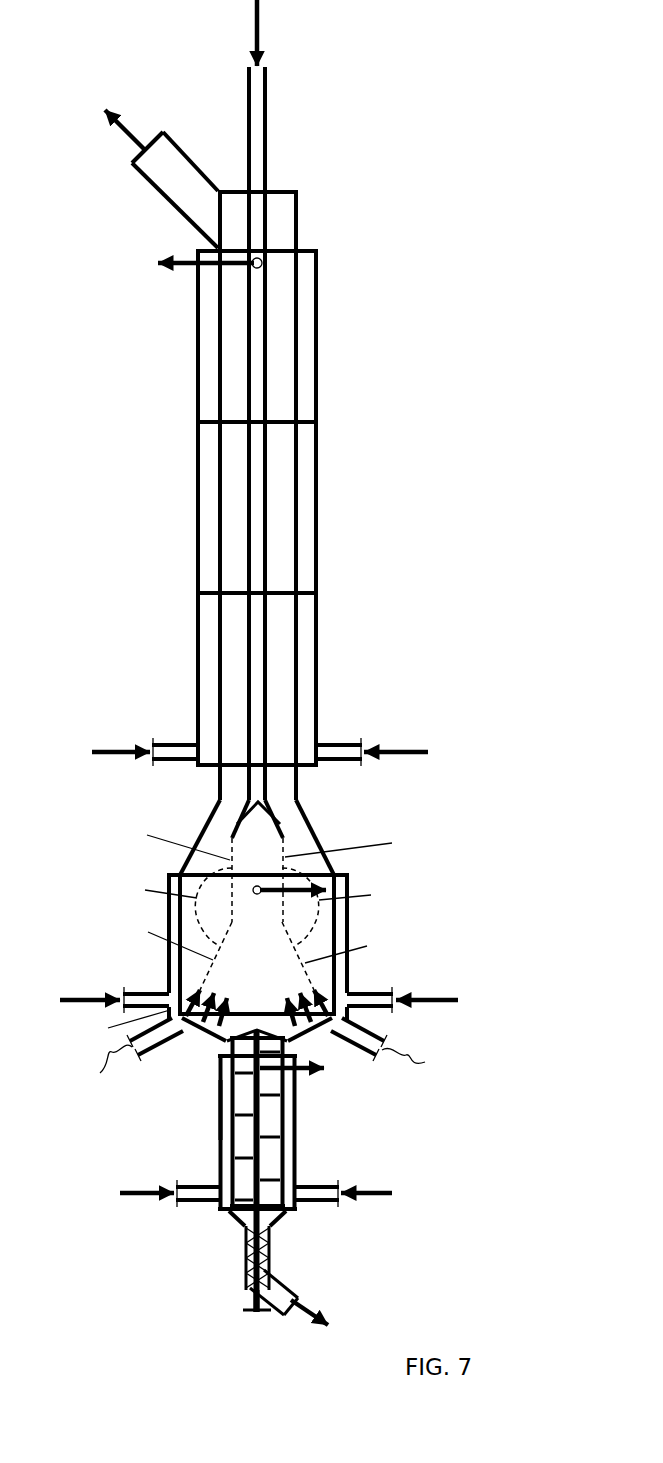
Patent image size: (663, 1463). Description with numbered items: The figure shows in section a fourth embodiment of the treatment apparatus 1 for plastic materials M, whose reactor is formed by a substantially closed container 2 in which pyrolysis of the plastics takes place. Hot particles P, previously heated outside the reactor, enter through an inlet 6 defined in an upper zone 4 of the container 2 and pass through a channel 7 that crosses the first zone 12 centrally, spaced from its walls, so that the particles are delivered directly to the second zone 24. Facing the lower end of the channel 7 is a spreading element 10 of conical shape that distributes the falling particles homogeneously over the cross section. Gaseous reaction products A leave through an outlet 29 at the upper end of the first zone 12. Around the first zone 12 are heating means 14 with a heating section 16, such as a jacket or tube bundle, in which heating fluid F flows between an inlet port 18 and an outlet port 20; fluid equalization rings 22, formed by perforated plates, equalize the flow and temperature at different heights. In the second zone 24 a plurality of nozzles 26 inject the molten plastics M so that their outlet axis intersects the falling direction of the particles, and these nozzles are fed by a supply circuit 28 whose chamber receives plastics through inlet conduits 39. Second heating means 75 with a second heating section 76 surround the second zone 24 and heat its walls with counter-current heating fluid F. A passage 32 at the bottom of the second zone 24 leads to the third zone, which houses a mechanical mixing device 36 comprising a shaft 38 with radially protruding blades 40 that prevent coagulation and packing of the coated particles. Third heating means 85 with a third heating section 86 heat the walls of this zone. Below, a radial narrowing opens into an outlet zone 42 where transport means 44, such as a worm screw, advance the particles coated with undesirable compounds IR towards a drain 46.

The treatment apparatus 1 is at (396, 127).
The container 2 is at (299, 220).
The upper zone 4 is at (217, 187).
The inlet 6 is at (268, 188).
The channel 7 is at (268, 565).
The spreading element 10 is at (286, 832).
The first zone 12 is at (300, 450).
The heating means 14 is at (197, 481).
The heating section 16 is at (197, 443).
The inlet port 18 is at (150, 750).
The outlet port 20 is at (262, 264).
The fluid equalization rings 22 is at (224, 421).
The second zone 24 is at (190, 962).
The nozzles 26 is at (217, 1032).
The supply circuit 28 is at (176, 1201).
The outlet 29 is at (163, 180).
The passage 32 is at (262, 1036).
The mechanical mixing device 36 is at (251, 1136).
The shaft 38 is at (262, 1157).
The inlet conduits 39 is at (262, 1054).
The blades 40 is at (266, 1055).
The outlet zone 42 is at (273, 1254).
The transport means 44 is at (250, 1268).
The drain 46 is at (297, 1298).
The second heating means 75 is at (352, 921).
The second heating section 76 is at (350, 970).
The third heating means 85 is at (300, 1142).
The third heating section 86 is at (222, 1110).